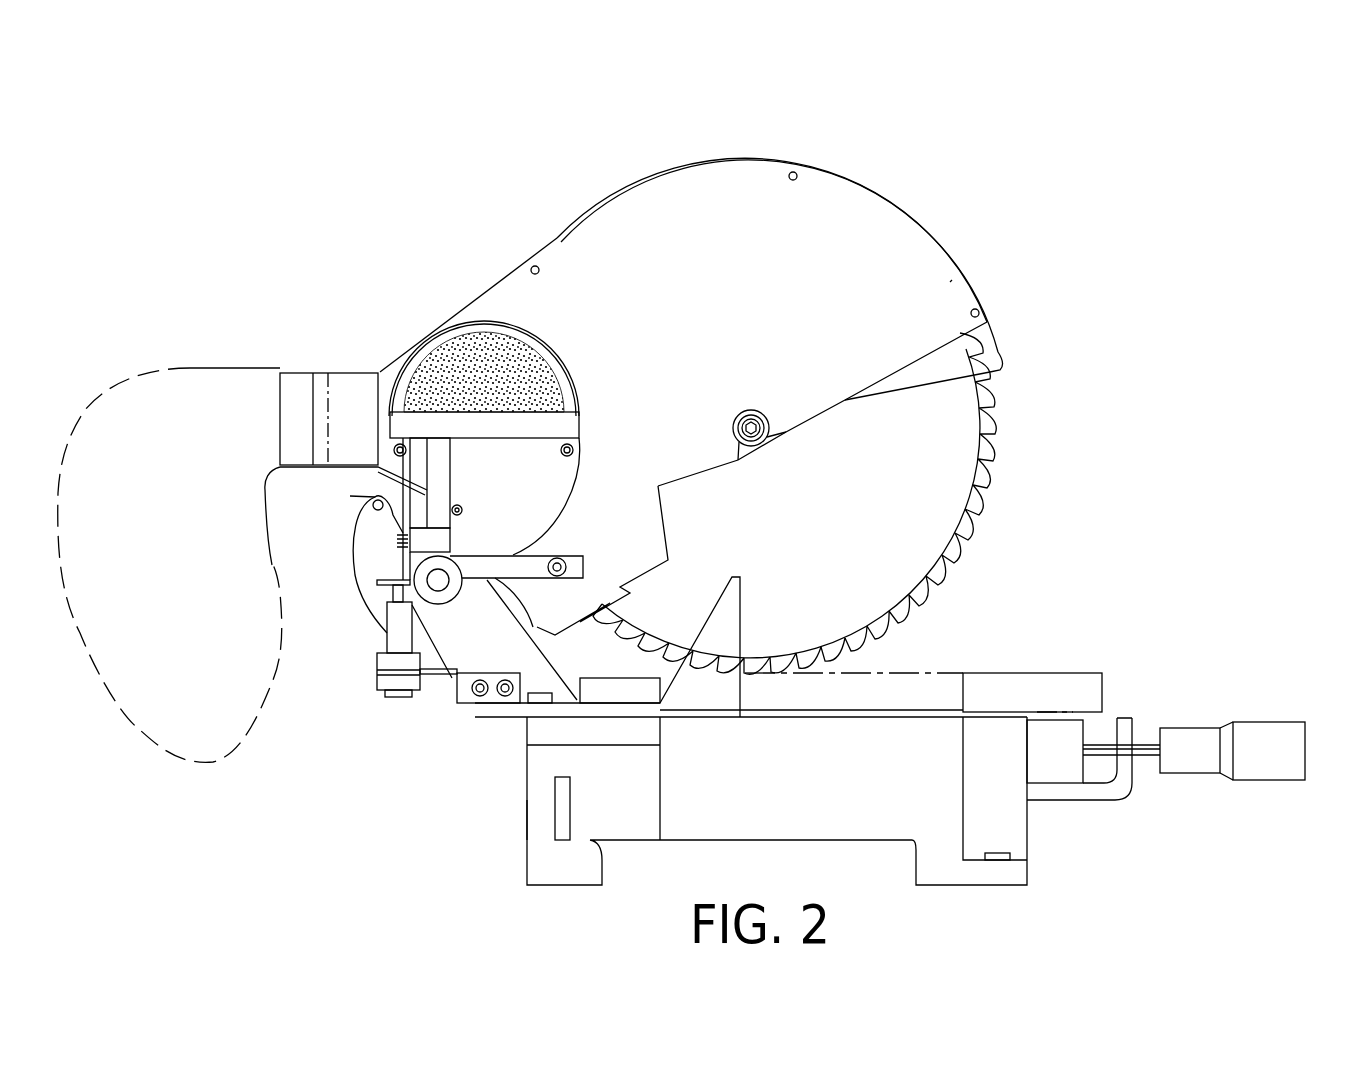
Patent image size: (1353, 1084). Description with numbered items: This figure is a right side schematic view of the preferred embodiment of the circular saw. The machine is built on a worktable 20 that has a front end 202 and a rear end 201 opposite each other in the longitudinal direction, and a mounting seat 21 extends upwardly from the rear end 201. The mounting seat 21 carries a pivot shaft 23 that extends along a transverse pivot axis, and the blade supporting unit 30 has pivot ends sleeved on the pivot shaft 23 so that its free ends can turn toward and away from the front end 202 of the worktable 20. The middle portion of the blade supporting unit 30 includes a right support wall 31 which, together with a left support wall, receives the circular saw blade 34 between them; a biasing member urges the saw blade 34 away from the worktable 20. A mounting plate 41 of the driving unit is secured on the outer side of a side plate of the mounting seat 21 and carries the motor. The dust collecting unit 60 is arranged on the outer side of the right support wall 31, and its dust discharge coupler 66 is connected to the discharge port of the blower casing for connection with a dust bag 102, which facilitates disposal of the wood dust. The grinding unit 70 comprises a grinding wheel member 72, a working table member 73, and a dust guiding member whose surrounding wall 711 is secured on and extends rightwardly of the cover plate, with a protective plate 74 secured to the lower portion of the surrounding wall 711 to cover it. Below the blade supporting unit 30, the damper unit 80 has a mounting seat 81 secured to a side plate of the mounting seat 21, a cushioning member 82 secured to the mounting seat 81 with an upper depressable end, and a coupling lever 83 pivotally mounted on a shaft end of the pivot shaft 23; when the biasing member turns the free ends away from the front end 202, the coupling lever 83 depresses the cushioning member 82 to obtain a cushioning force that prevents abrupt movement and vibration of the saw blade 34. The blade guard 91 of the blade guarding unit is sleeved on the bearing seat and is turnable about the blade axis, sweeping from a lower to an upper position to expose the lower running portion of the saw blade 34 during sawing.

The worktable 20 is at (527, 832).
The rear end 201 is at (527, 820).
The front end 202 is at (962, 708).
The mounting seat 21 is at (426, 675).
The pivot shaft 23 is at (455, 546).
The blade supporting unit 30 is at (942, 238).
The right support wall 31 is at (950, 282).
The circular saw blade 34 is at (982, 413).
The mounting plate 41 is at (372, 524).
The dust collecting unit 60 is at (344, 360).
The dust discharge coupler 66 is at (322, 372).
The grinding unit 70 is at (568, 362).
The surrounding wall 711 is at (520, 325).
The grinding wheel member 72 is at (456, 368).
The working table member 73 is at (401, 357).
The protective plate 74 is at (557, 462).
The damper unit 80 is at (372, 646).
The mounting seat 81 is at (437, 677).
The cushioning member 82 is at (383, 633).
The coupling lever 83 is at (510, 568).
The blade guard 91 is at (983, 337).
The dust bag 102 is at (135, 400).